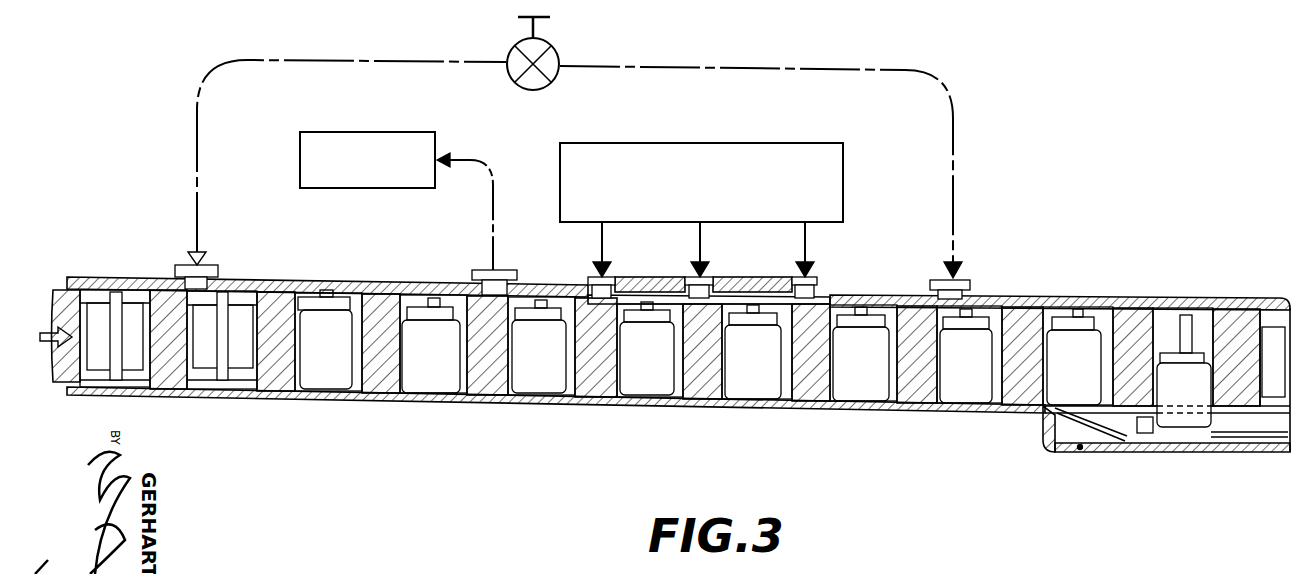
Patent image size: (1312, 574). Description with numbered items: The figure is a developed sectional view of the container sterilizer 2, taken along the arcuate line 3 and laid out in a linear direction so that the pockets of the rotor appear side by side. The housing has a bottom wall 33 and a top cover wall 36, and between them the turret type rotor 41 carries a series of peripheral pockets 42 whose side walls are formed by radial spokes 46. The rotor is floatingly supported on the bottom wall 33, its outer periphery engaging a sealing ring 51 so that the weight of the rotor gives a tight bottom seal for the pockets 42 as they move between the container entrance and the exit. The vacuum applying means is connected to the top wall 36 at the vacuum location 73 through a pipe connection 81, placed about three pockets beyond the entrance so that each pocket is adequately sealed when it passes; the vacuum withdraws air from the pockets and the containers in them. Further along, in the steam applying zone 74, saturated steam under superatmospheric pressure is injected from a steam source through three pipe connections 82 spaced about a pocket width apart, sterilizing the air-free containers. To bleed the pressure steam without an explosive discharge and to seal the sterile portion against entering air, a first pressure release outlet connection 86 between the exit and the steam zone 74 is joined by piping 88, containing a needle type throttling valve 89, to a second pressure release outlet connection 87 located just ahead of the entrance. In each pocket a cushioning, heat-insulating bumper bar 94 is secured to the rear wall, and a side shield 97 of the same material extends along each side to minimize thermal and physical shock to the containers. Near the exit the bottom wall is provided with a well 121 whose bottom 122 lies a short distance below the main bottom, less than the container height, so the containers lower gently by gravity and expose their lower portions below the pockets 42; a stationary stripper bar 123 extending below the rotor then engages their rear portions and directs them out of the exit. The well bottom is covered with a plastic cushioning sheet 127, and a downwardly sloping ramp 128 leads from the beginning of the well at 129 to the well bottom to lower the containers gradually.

The container sterilizer 2 is at (1020, 283).
The line 3— 3 is at (671, 143).
The bottom wall 33 is at (640, 407).
The top cover wall 36 is at (362, 283).
The rotor 41 is at (58, 282).
The pockets 42 is at (352, 403).
The spokes 46 is at (273, 382).
The sealing ring 51 is at (320, 388).
The vacuum location 73 is at (494, 239).
The steam applying zone 74 is at (699, 240).
The pipe connection 81 is at (510, 278).
The pipe connections 82 is at (589, 279).
The first pressure release outlet connection 86 is at (967, 283).
The second pressure release outlet connection 87 is at (207, 265).
The piping 88 is at (693, 40).
The throttling valve 89 is at (511, 47).
The bumper bar 94 is at (137, 278).
The side shield 97 is at (100, 368).
The well 121 is at (1120, 430).
The bottom of well 122 is at (1167, 454).
The stripper bar 123 is at (1243, 433).
The sheet 127 is at (1080, 449).
The ramp 128 is at (1052, 449).
The beginning of the well 129 is at (1047, 415).